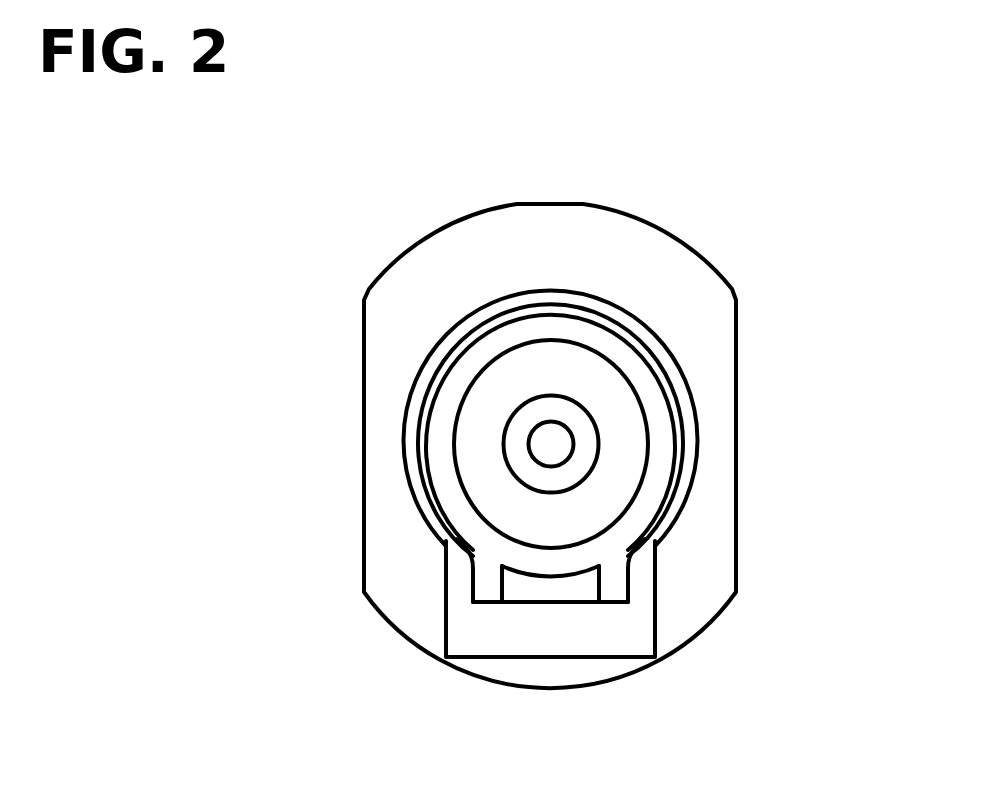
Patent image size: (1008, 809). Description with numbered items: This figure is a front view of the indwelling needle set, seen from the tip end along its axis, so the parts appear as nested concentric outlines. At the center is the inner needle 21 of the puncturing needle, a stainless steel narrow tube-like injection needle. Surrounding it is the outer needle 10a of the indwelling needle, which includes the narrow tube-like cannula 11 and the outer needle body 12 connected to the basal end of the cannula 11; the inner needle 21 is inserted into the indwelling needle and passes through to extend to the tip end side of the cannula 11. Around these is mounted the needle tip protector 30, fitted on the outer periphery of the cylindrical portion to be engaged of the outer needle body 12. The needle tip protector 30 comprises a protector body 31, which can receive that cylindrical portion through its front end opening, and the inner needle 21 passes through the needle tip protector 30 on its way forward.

The needle tip protector 30 is at (432, 262).
The protector body 31 is at (535, 635).
The outer needle 10a is at (655, 440).
The outer needle body 12 is at (628, 421).
The cannula 11 is at (587, 468).
The inner needle 21 is at (551, 432).